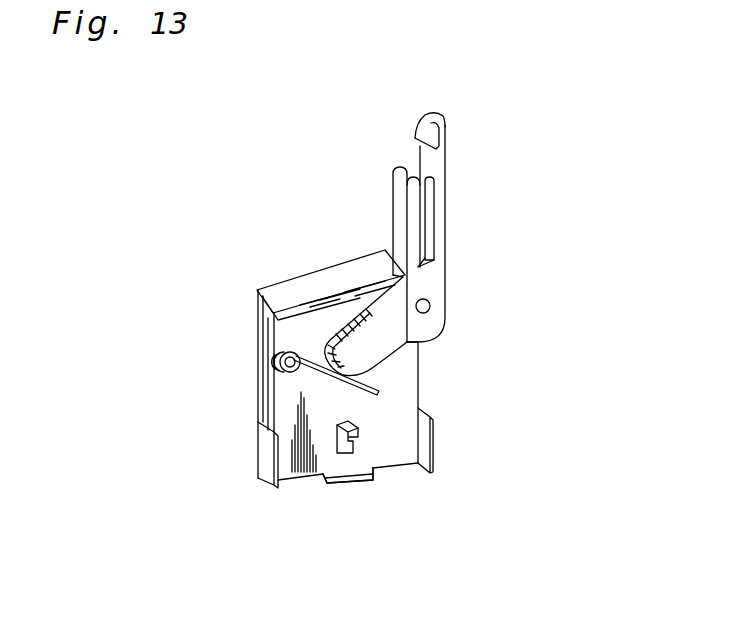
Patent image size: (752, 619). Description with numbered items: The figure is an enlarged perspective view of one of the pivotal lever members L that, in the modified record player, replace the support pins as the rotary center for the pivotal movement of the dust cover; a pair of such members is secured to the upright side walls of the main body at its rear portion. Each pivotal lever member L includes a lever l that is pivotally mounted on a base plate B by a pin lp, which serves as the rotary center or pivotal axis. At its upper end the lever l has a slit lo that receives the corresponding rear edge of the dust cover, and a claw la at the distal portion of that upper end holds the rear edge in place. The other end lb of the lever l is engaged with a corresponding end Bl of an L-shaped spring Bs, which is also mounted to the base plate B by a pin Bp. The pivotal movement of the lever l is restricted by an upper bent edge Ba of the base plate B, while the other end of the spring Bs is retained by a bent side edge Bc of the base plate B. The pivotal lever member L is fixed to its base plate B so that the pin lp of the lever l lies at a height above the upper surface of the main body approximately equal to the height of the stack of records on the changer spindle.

The pivotal lever member L is at (533, 167).
The lever l is at (446, 231).
The claw la is at (430, 118).
The slit lo is at (428, 168).
The pin lp is at (429, 305).
The other end of lever lb is at (388, 360).
The base plate B is at (407, 388).
The upper bent edge Ba is at (292, 291).
The L-shaped spring Bs is at (268, 410).
The bent side edge Bc is at (272, 468).
The pin Bp is at (280, 371).
The end of spring Bl is at (387, 360).